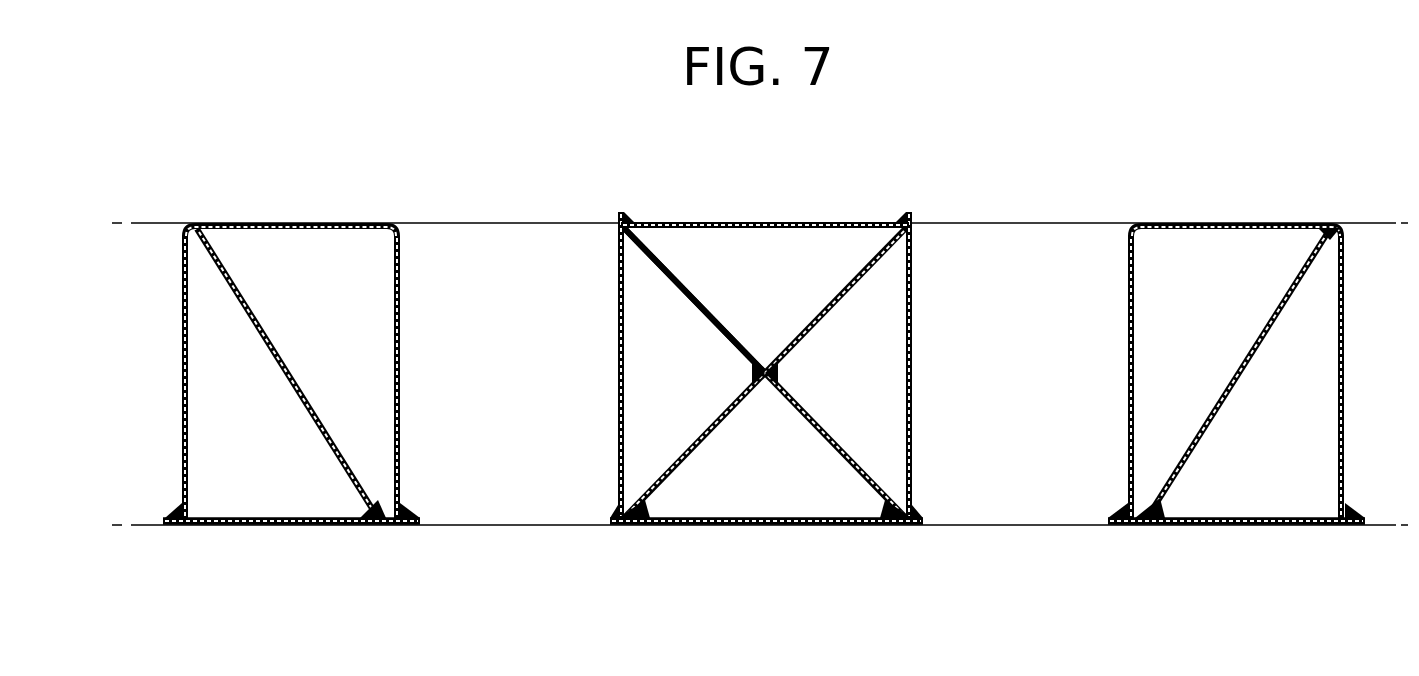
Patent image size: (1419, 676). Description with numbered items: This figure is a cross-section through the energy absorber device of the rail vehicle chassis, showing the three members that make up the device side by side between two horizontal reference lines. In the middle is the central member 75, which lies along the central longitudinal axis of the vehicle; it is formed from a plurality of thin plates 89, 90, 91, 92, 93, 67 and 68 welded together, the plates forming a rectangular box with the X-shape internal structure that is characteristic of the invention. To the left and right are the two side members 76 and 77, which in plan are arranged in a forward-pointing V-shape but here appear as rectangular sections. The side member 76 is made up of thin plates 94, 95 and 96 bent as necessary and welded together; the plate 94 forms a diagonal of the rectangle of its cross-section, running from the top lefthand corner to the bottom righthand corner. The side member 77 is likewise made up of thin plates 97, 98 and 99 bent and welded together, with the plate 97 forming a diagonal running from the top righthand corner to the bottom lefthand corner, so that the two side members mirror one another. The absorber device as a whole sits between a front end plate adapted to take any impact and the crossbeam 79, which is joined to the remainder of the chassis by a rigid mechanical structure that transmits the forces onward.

The thin plate 67 is at (690, 460).
The thin plate 68 is at (825, 435).
The central member 75 is at (765, 355).
The side member 76 is at (259, 357).
The side member 77 is at (1263, 357).
The crossbeam 79 is at (500, 246).
The thin plate 89 is at (620, 405).
The thin plate 90 is at (683, 286).
The thin plate 91 is at (790, 527).
The thin plate 92 is at (912, 312).
The thin plate 93 is at (733, 222).
The thin plate 94 is at (182, 367).
The thin plate 95 is at (257, 222).
The thin plate 96 is at (303, 527).
The thin plate 97 is at (1346, 360).
The thin plate 98 is at (1183, 222).
The thin plate 99 is at (1237, 527).